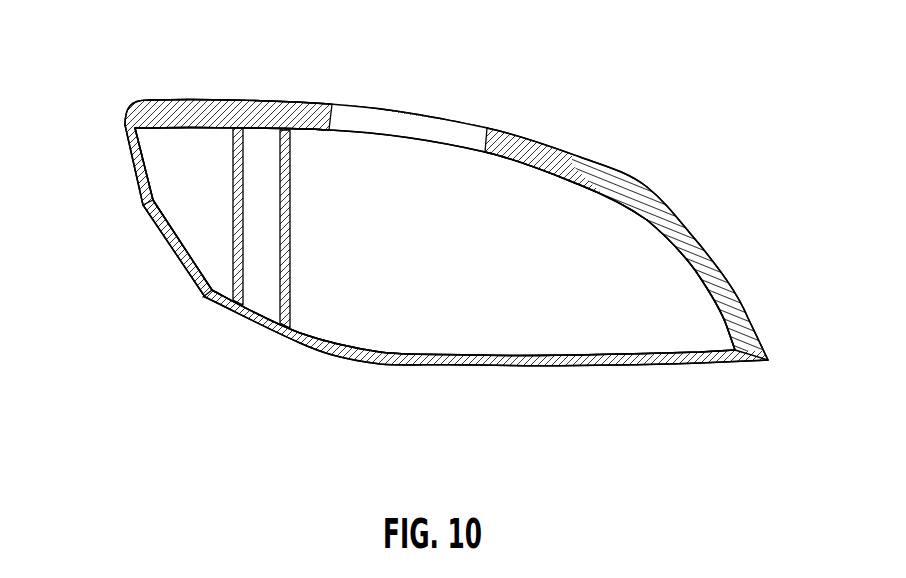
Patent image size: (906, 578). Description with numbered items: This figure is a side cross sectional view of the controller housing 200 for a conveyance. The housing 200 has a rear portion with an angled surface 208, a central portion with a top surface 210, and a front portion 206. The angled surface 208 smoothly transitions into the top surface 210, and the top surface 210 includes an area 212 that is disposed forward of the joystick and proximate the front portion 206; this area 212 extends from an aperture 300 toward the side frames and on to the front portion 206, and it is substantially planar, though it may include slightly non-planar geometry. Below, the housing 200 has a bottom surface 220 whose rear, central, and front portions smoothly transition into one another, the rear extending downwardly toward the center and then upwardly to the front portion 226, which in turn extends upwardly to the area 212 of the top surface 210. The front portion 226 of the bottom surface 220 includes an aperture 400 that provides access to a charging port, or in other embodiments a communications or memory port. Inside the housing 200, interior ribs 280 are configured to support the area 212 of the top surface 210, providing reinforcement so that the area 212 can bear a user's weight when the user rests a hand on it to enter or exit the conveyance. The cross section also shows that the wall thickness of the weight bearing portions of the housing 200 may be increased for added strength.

The housing 200 is at (624, 392).
The front portion 206 is at (109, 173).
The angled surface 208 is at (751, 258).
The top surface 210 is at (585, 146).
The area 212 is at (194, 86).
The bottom surface 220 is at (424, 384).
The front portion 226 is at (186, 340).
The interior ribs 280 is at (237, 275).
The aperture 300 is at (455, 135).
The aperture 400 is at (176, 255).